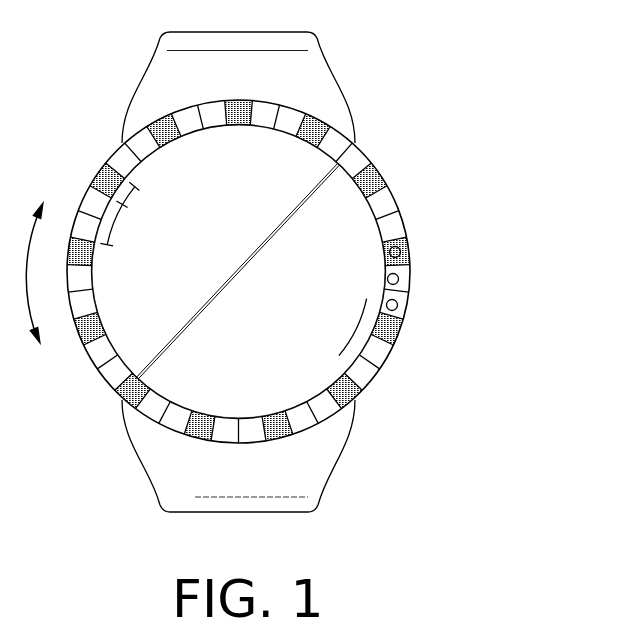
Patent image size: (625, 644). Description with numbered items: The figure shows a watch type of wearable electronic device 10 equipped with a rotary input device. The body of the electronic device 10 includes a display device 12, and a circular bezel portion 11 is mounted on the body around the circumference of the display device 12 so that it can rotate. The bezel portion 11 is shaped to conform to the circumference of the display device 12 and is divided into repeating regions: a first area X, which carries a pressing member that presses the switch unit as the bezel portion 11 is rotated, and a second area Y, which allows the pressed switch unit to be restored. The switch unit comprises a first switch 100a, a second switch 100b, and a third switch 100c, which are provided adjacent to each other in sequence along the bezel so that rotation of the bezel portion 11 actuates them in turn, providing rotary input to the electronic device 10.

The electronic device 10 is at (292, 272).
The bezel portion 11 is at (375, 355).
The display device 12 is at (345, 223).
The first switch 100a is at (401, 250).
The second switch 100b is at (399, 278).
The third switch 100c is at (398, 304).
The first area X is at (131, 199).
The second area Y is at (115, 225).